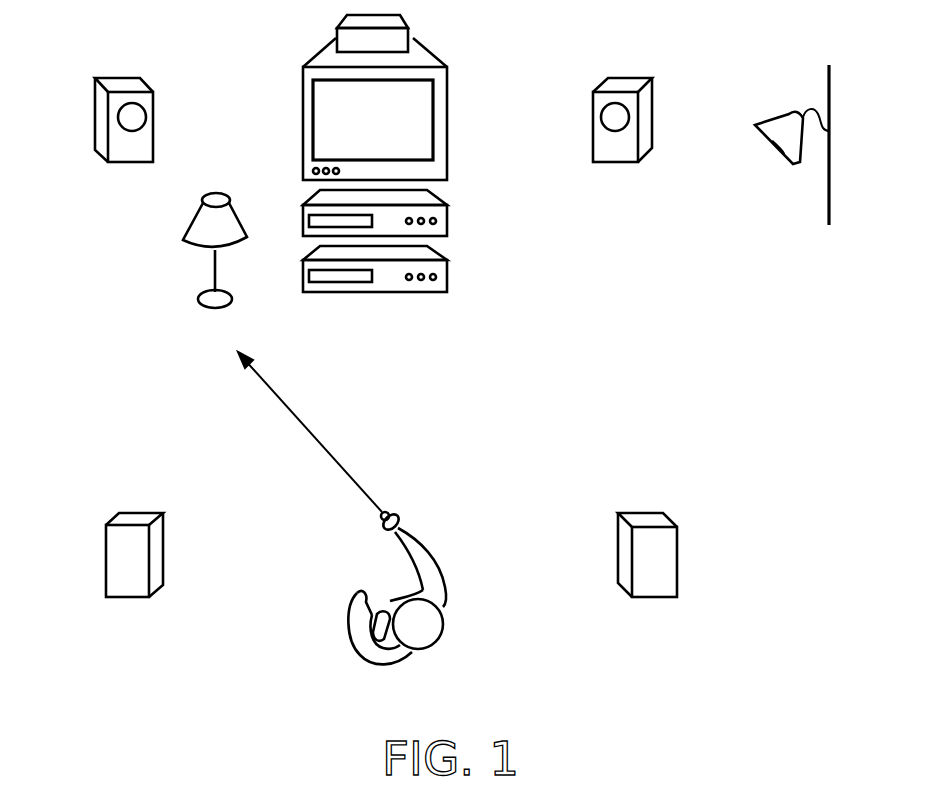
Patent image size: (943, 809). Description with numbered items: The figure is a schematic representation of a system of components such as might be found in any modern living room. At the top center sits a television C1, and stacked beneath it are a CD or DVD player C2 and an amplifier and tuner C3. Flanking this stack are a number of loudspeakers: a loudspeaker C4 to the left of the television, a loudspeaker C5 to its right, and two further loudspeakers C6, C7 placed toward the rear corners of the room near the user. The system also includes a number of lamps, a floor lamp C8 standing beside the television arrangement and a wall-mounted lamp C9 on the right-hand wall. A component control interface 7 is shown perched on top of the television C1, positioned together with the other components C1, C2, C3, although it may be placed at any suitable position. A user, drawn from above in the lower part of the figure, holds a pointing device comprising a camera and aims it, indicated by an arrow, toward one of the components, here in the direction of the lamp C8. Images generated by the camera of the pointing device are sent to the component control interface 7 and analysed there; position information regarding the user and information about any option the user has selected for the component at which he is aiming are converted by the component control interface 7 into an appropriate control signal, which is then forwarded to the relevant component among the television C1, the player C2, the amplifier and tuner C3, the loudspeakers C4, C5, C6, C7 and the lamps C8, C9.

The television C1 is at (438, 118).
The CD or DVD player C2 is at (438, 213).
The amplifier and tuner C3 is at (438, 268).
The loudspeaker C4 is at (100, 128).
The loudspeaker C5 is at (643, 118).
The loudspeaker C6 is at (667, 582).
The loudspeaker C7 is at (112, 574).
The lamp C8 is at (194, 234).
The lamp C9 is at (782, 126).
The component control interface 7 is at (408, 34).